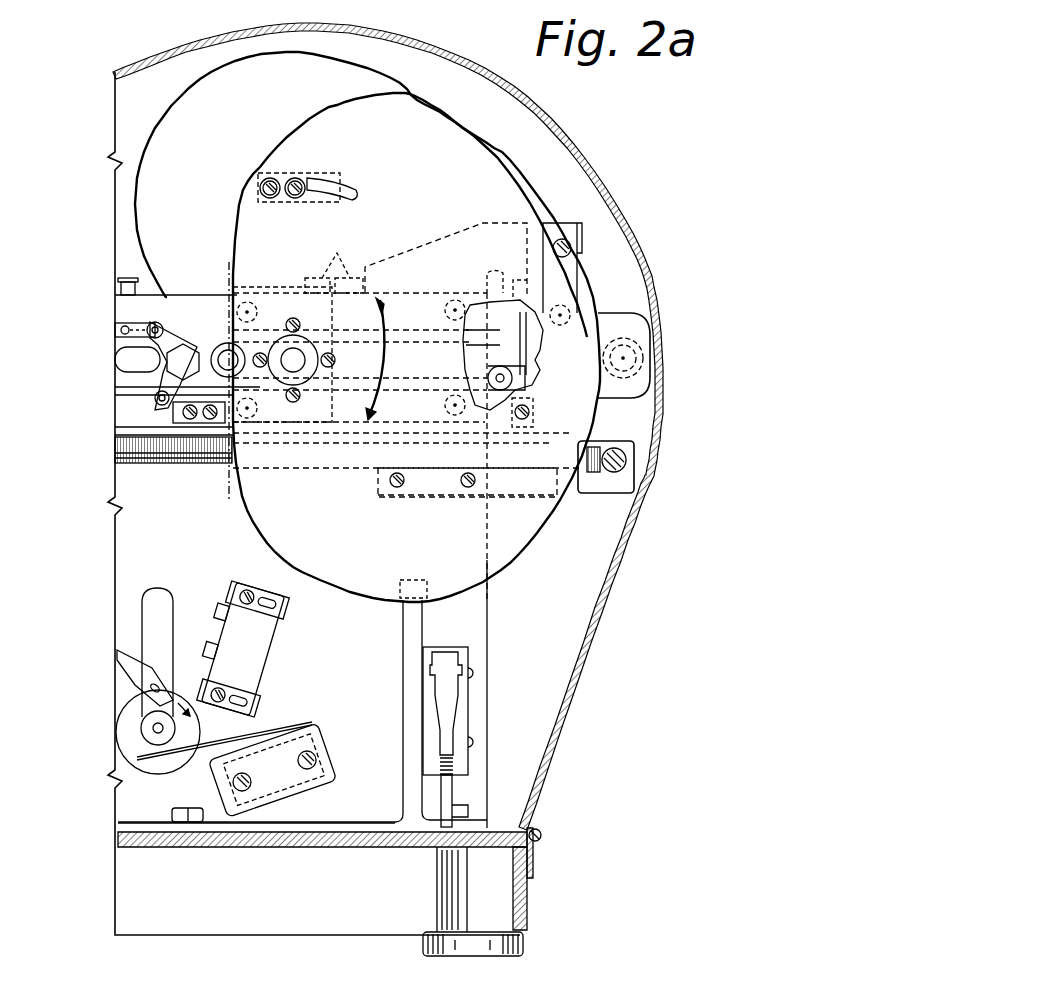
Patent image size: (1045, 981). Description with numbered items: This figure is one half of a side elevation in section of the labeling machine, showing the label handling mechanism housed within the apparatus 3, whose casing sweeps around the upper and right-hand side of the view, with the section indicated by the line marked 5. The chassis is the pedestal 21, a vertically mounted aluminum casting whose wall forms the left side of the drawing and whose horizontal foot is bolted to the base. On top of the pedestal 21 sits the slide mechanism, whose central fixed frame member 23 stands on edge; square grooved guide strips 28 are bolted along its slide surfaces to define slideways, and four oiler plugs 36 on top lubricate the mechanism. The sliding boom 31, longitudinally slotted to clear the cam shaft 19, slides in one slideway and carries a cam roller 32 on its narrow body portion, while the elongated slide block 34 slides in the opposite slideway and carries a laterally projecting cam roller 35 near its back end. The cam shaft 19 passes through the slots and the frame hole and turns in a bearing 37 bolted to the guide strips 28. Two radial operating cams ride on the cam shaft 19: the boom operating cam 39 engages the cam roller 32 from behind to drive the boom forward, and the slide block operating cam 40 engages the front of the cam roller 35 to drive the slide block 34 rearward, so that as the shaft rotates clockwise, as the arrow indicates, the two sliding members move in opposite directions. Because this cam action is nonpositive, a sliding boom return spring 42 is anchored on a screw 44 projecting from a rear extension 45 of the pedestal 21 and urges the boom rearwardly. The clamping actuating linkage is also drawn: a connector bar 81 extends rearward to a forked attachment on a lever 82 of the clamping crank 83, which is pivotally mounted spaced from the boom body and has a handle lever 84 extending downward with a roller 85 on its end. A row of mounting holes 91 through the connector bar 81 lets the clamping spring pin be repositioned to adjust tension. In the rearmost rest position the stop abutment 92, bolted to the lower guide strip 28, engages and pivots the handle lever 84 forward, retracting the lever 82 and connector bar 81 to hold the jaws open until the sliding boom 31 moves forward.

The apparatus 3 is at (573, 136).
The section line 5- 5 is at (224, 270).
The cam shaft 19 is at (300, 352).
The pedestal 21 is at (118, 545).
The central fixed frame member 23 is at (513, 378).
The guide strips 28 is at (115, 305).
The sliding boom 31 is at (115, 383).
The cam roller 32 is at (222, 356).
The slide block 34 is at (648, 322).
The cam roller 35 is at (650, 373).
The oiler plugs 36 is at (127, 280).
The bearing 37 is at (276, 303).
The boom operating cam 39 is at (506, 566).
The slide block operating cam 40 is at (180, 100).
The sliding boom return spring 42 is at (130, 456).
The screw 44 is at (628, 461).
The rear extension 45 is at (590, 494).
The connector bar 81 is at (115, 333).
The lever 82 is at (163, 322).
The clamping crank 83 is at (165, 352).
The handle lever 84 is at (153, 405).
The roller 85 is at (110, 400).
The mounting holes 91 is at (125, 326).
The stop abutment 92 is at (187, 387).